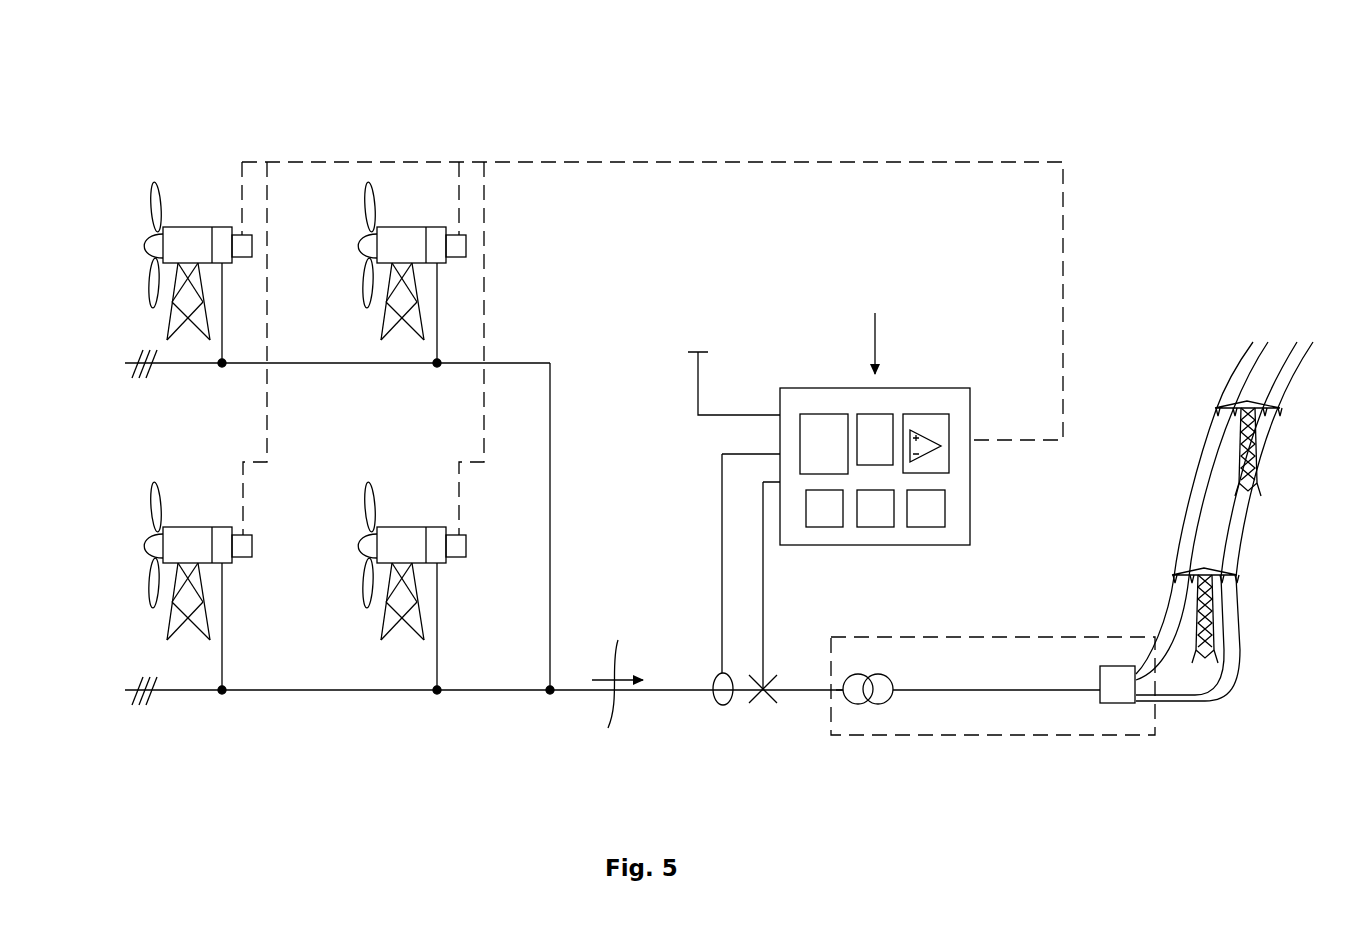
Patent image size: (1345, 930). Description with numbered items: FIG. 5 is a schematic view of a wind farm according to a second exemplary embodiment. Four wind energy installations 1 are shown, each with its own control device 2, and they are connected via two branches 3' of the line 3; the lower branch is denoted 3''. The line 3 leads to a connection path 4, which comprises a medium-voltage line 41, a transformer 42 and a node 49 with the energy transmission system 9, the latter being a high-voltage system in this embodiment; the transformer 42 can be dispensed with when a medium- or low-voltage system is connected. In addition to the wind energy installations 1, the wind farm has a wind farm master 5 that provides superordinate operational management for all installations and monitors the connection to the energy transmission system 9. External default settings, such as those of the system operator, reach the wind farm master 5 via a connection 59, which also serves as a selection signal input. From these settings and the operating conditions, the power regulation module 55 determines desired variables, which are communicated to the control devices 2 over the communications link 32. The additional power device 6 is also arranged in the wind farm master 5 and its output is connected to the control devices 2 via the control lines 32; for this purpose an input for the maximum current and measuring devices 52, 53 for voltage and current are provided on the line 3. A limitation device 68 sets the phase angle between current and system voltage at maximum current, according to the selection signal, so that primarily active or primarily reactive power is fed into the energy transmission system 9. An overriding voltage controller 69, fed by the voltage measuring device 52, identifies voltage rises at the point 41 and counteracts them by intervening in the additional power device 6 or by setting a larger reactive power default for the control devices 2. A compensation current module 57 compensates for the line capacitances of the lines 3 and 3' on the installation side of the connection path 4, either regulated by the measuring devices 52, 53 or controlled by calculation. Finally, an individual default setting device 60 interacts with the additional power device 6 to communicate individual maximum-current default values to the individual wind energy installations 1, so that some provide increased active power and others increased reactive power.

The wind energy installation 1 is at (124, 226).
The control device 2 is at (244, 259).
The line 3 is at (717, 686).
The branch 3' is at (587, 526).
The branch line 3'' is at (358, 512).
The communications link 32 is at (740, 160).
The wind farm master 5 is at (851, 443).
The power regulation module 55 is at (832, 420).
The compensation current module 57 is at (873, 420).
The additional power device 6 is at (928, 420).
The connection 59 is at (697, 385).
The individual default setting device 60 is at (825, 527).
The limitation device 68 is at (875, 527).
The overriding voltage controller 69 is at (925, 527).
The measuring device for voltage 52 is at (723, 705).
The measuring device for current 53 is at (765, 705).
The connection path 4 is at (978, 682).
The medium-voltage line 41 is at (830, 693).
The transformer 42 is at (868, 704).
The node 49 is at (1113, 703).
The energy transmission system 9 is at (1190, 438).